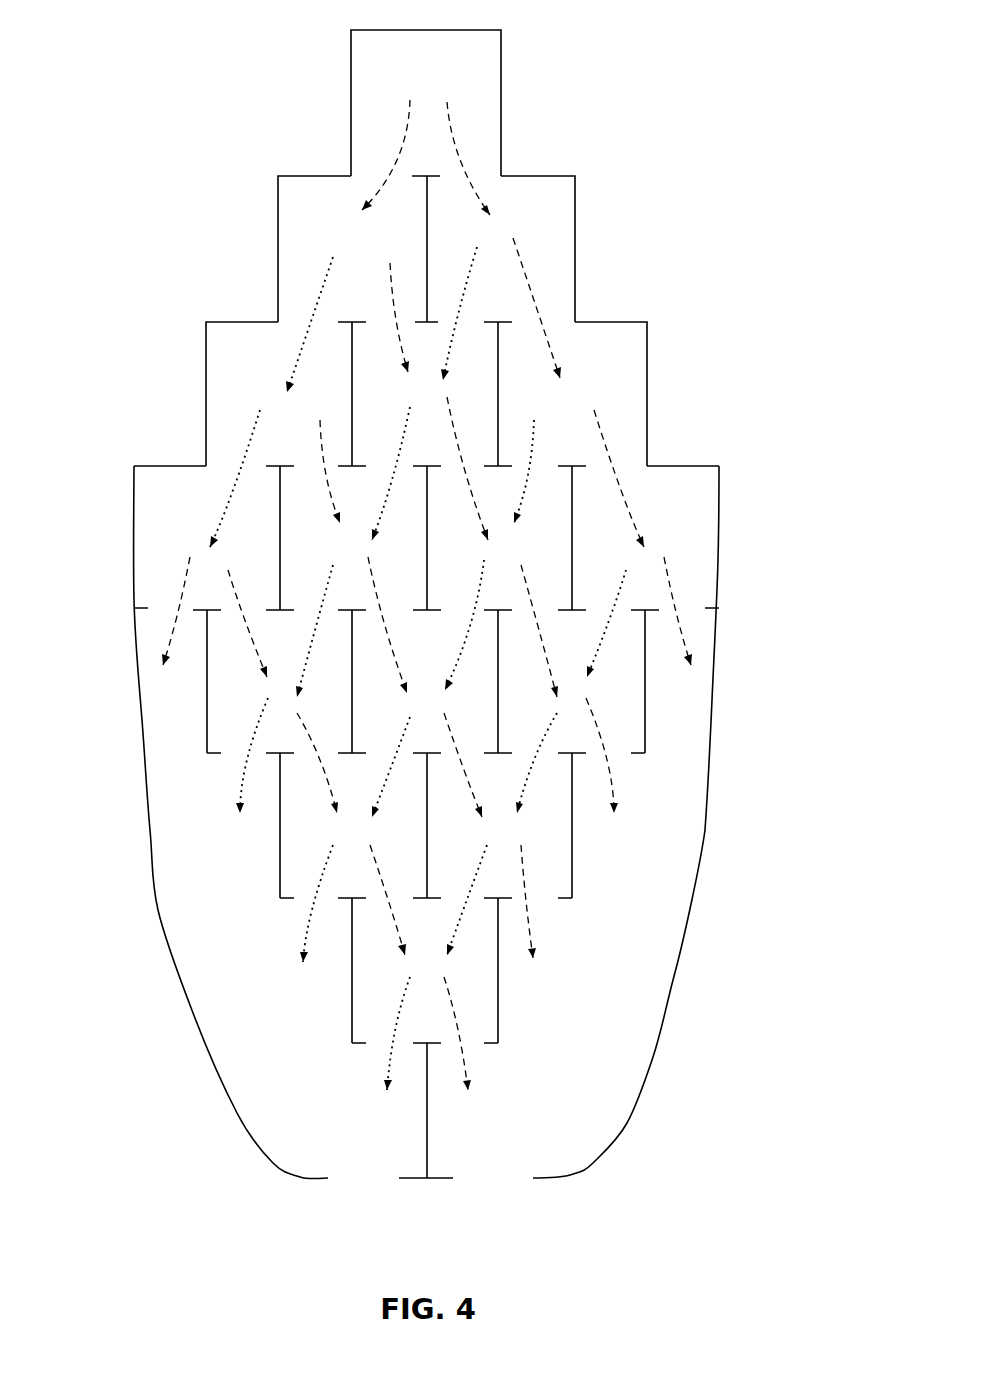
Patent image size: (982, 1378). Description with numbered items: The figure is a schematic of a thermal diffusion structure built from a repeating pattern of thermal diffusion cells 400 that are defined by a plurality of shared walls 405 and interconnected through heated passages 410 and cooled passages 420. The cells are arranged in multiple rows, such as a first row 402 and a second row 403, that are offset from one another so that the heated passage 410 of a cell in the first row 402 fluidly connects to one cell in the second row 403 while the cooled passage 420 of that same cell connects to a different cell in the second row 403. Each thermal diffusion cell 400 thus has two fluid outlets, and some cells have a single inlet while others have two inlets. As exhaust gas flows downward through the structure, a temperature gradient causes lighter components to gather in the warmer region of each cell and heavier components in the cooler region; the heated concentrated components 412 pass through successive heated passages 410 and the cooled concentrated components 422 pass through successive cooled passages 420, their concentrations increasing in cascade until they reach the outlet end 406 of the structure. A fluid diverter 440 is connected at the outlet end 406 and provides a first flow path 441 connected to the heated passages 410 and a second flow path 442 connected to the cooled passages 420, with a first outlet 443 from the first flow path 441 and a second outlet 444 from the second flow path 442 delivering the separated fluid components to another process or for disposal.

The thermal diffusion cells 400 is at (477, 75).
The first row 402 is at (630, 177).
The second row 403 is at (693, 326).
The shared walls 405 is at (647, 733).
The outlet end 406 is at (153, 1130).
The heated passage 410 is at (370, 1050).
The heated concentrated components 412 is at (177, 607).
The cooled passage 420 is at (547, 902).
The cooled concentrated components 422 is at (672, 577).
The fluid diverter 440 is at (158, 913).
The first flow path 441 is at (205, 966).
The second flow path 442 is at (613, 1019).
The first outlet 443 is at (333, 1180).
The second outlet 444 is at (520, 1188).